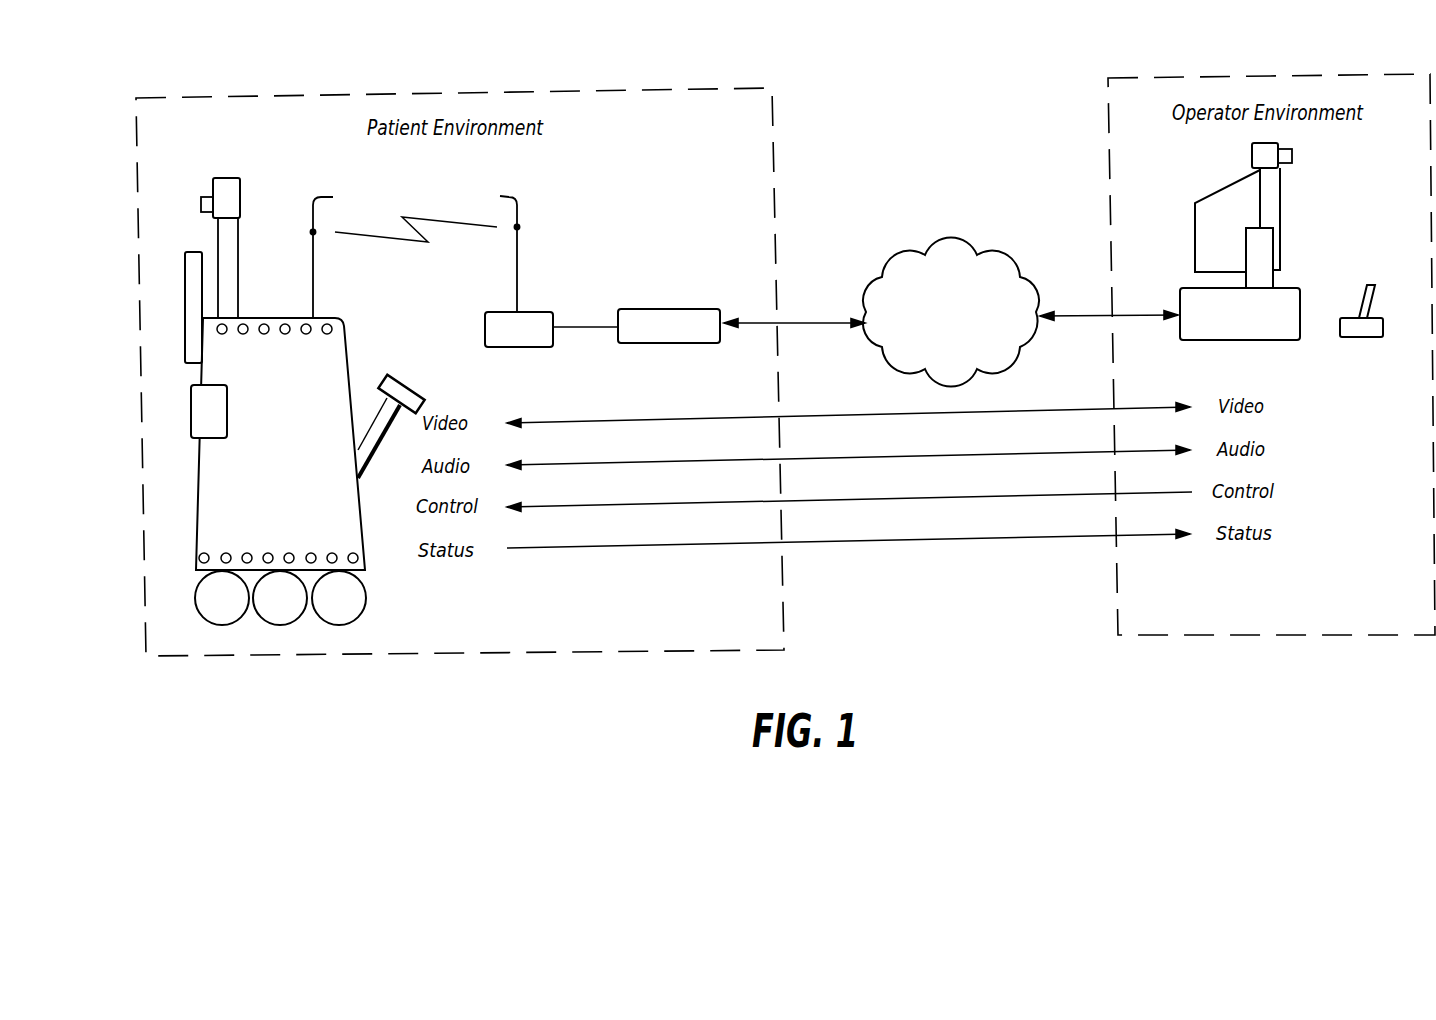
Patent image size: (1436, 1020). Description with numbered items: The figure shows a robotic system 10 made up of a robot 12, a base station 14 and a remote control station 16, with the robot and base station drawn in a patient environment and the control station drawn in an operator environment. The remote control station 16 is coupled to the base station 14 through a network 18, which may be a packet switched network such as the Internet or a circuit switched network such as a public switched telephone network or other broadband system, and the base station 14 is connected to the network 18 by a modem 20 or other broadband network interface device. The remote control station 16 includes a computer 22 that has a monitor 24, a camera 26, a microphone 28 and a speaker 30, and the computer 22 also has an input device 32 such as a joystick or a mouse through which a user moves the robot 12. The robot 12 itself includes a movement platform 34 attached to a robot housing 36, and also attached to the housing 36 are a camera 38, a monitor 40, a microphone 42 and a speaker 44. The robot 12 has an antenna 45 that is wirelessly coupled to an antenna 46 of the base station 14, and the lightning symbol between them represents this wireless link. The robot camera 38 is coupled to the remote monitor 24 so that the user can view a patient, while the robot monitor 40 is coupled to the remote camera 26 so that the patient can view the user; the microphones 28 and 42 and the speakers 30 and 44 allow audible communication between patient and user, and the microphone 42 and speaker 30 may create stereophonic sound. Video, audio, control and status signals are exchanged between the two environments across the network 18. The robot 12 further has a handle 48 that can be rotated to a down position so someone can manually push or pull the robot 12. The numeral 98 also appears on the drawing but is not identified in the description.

The robotic system 10 is at (945, 106).
The robot 12 is at (325, 372).
The base station 14 is at (533, 312).
The remote control station 16 is at (1195, 243).
The network 18 is at (951, 311).
The modem 20 is at (667, 309).
The computer 22 is at (1272, 332).
The monitor 24 is at (1272, 196).
The camera 26 is at (1253, 153).
The microphone 28 is at (1253, 230).
The speaker 30 is at (1267, 280).
The input device 32 is at (1373, 327).
The movement platform 34 is at (343, 603).
The robot housing 36 is at (235, 530).
The camera 38 is at (235, 208).
The monitor 40 is at (193, 295).
The microphone 42 is at (227, 187).
The speaker 44 is at (191, 418).
The antenna 45 is at (335, 251).
The antenna 46 is at (496, 248).
The handle 48 is at (397, 392).
The sensors 98 is at (218, 329).